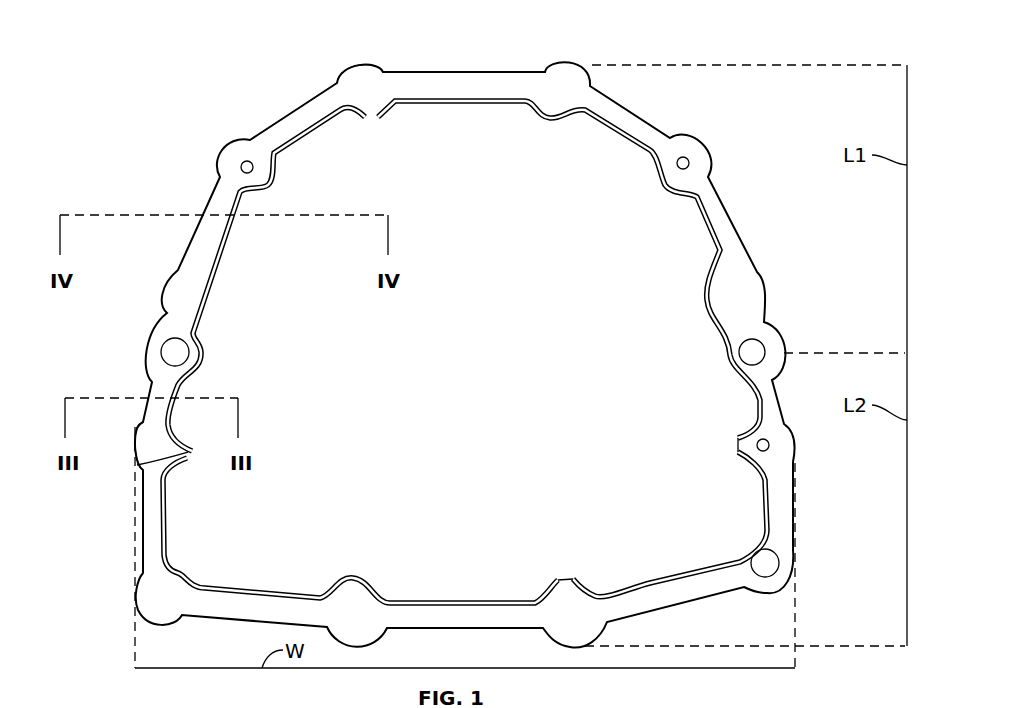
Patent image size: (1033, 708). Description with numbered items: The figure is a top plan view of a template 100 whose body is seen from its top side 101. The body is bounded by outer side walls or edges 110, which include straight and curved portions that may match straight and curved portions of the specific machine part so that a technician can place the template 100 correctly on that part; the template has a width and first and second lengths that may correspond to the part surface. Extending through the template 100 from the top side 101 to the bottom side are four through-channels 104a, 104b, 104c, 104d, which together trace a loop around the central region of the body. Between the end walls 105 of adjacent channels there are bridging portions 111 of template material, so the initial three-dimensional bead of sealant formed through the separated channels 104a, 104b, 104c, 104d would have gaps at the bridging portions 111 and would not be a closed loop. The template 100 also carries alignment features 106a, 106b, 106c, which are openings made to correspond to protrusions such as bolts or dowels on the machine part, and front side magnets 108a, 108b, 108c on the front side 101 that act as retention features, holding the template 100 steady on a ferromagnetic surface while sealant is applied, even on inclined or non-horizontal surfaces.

The template 100 is at (736, 52).
The top side 101 is at (485, 364).
The through-channel 104a is at (297, 127).
The through-channel 104b is at (500, 100).
The through-channel 104c is at (767, 505).
The through-channel 104d is at (368, 580).
The end wall 105 is at (370, 118).
The alignment feature 106a is at (165, 350).
The alignment feature 106b is at (755, 345).
The alignment feature 106c is at (768, 565).
The front side magnet 108a is at (243, 164).
The front side magnet 108b is at (686, 159).
The front side magnet 108c is at (768, 447).
The outer side wall 110 is at (737, 222).
The bridging portion 111 is at (730, 445).